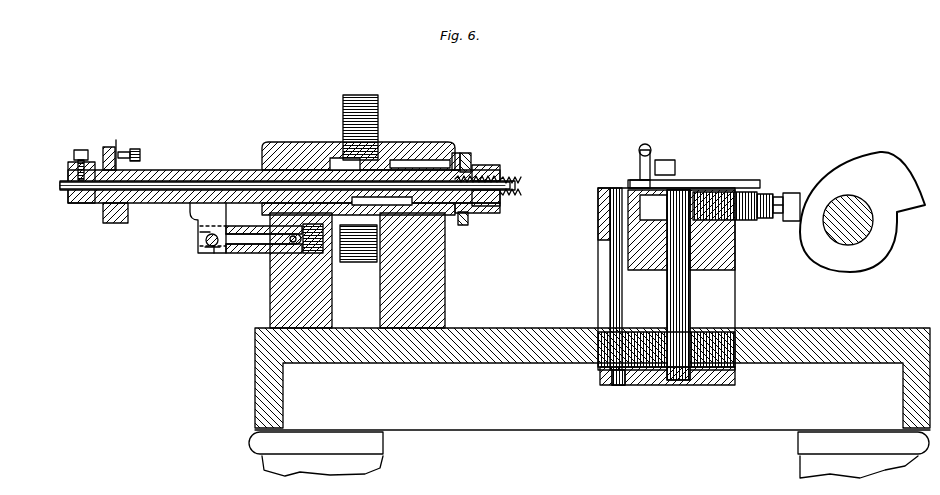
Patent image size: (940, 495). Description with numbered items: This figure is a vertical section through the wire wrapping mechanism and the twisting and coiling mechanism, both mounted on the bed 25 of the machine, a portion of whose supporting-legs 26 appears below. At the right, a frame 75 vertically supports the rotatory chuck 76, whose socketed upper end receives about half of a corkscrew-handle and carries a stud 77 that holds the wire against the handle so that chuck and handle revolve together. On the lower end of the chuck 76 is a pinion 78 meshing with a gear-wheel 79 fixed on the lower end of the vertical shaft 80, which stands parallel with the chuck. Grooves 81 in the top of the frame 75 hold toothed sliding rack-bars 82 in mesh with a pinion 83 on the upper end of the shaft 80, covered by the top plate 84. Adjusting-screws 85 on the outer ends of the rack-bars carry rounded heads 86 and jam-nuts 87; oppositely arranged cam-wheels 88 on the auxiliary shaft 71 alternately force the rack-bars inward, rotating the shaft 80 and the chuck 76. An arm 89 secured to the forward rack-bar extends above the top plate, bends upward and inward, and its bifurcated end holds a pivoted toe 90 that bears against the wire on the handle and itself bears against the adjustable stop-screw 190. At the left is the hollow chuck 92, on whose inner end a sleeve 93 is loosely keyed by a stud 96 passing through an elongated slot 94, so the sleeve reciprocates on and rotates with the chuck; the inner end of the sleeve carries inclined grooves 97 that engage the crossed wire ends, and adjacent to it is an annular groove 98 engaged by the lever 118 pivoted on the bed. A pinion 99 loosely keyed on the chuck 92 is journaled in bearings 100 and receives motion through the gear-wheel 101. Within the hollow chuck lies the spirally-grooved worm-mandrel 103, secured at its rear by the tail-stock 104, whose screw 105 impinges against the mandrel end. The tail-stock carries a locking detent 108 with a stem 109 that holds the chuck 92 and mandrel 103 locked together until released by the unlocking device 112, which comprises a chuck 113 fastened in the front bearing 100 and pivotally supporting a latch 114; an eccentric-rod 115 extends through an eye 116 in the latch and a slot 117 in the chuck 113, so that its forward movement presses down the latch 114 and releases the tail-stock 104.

The bed 25 is at (520, 320).
The supporting-legs 26 is at (372, 432).
The auxiliary shaft 71 is at (873, 225).
The frame 75 is at (735, 296).
The rotatory chuck 76 is at (610, 296).
The stud 77 is at (600, 190).
The pinion 78 is at (612, 378).
The gear-wheel 79 is at (660, 385).
The vertical shaft 80 is at (667, 299).
The grooves 81 is at (653, 207).
The sliding rack-bars 82 is at (765, 218).
The pinion 83 is at (688, 192).
The top plate 84 is at (720, 192).
The adjusting-screws 85 is at (778, 197).
The rounded heads 86 is at (792, 193).
The jam-nuts 87 is at (778, 214).
The cam-wheels 88 is at (862, 212).
The arm 89 is at (730, 180).
The pivoted toe 90 is at (640, 168).
The hollow chuck 92 is at (178, 172).
The sleeve 93 is at (490, 213).
The elongated slot 94 is at (425, 160).
The stud 96 is at (456, 153).
The inclined grooves 97 is at (513, 210).
The annular groove 98 is at (463, 225).
The pinion 99 is at (358, 235).
The bearings 100 is at (380, 310).
The gear-wheel 101 is at (358, 95).
The worm-mandrel 103 is at (60, 186).
The tail-stock 104 is at (112, 223).
The screw 105 is at (80, 150).
The locking detent 108 is at (116, 147).
The stem 109 is at (134, 149).
The unlocking device 112 is at (226, 226).
The chuck 113 is at (250, 253).
The latch 114 is at (200, 232).
The eccentric-rod 115 is at (208, 249).
The eye 116 is at (206, 243).
The slot 117 is at (214, 254).
The lever 118 is at (468, 153).
The adjustable stop-screw 190 is at (665, 160).